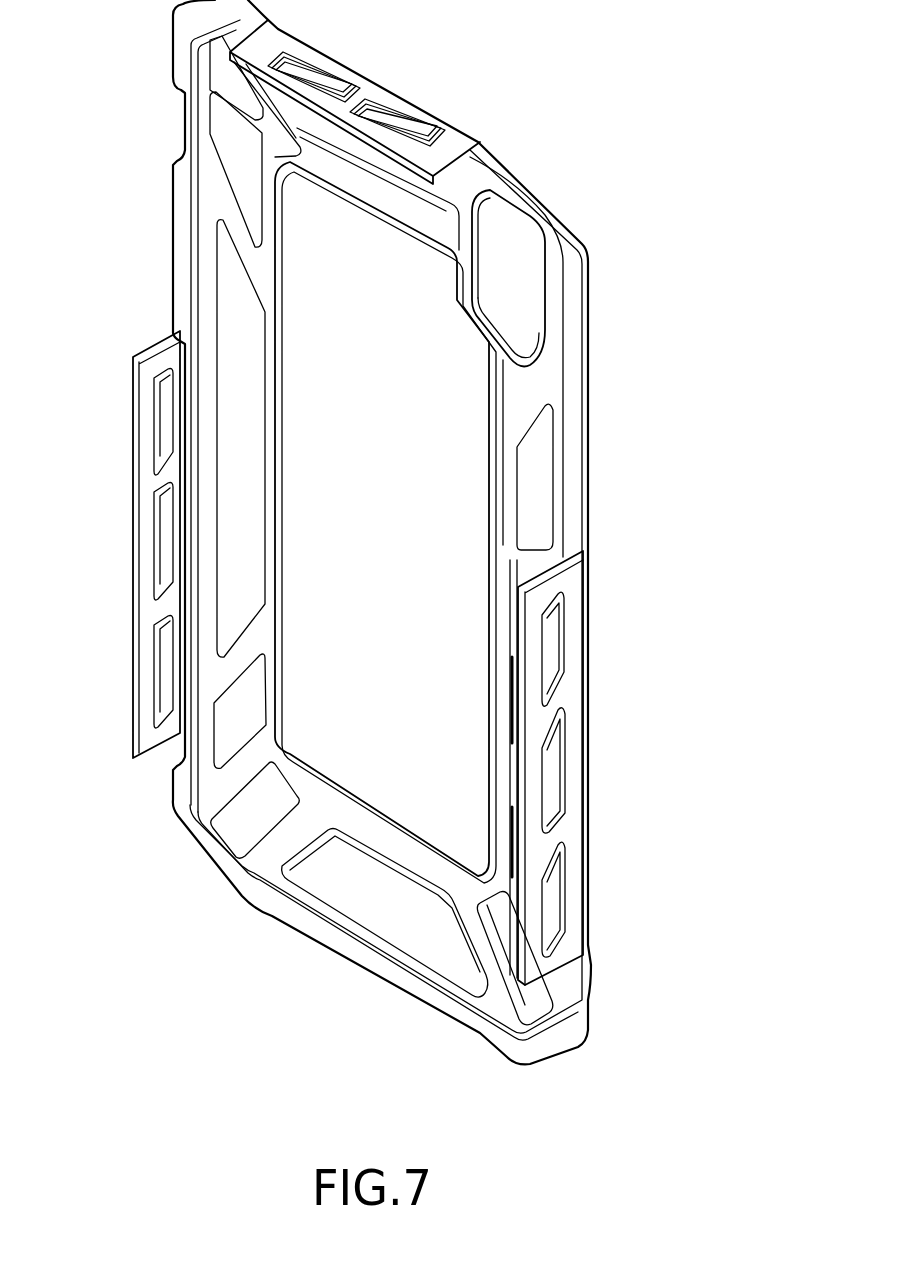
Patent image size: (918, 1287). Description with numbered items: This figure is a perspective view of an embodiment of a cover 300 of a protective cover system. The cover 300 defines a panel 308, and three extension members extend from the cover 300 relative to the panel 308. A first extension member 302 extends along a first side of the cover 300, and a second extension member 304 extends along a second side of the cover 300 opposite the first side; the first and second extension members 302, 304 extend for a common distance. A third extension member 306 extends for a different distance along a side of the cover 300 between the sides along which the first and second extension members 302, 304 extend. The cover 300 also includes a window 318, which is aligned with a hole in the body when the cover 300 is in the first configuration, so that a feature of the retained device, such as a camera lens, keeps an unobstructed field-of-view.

The cover 300 is at (548, 121).
The first extension member 302 is at (548, 698).
The second extension member 304 is at (148, 540).
The third extension member 306 is at (345, 105).
The panel 308 is at (393, 511).
The window 318 is at (553, 270).